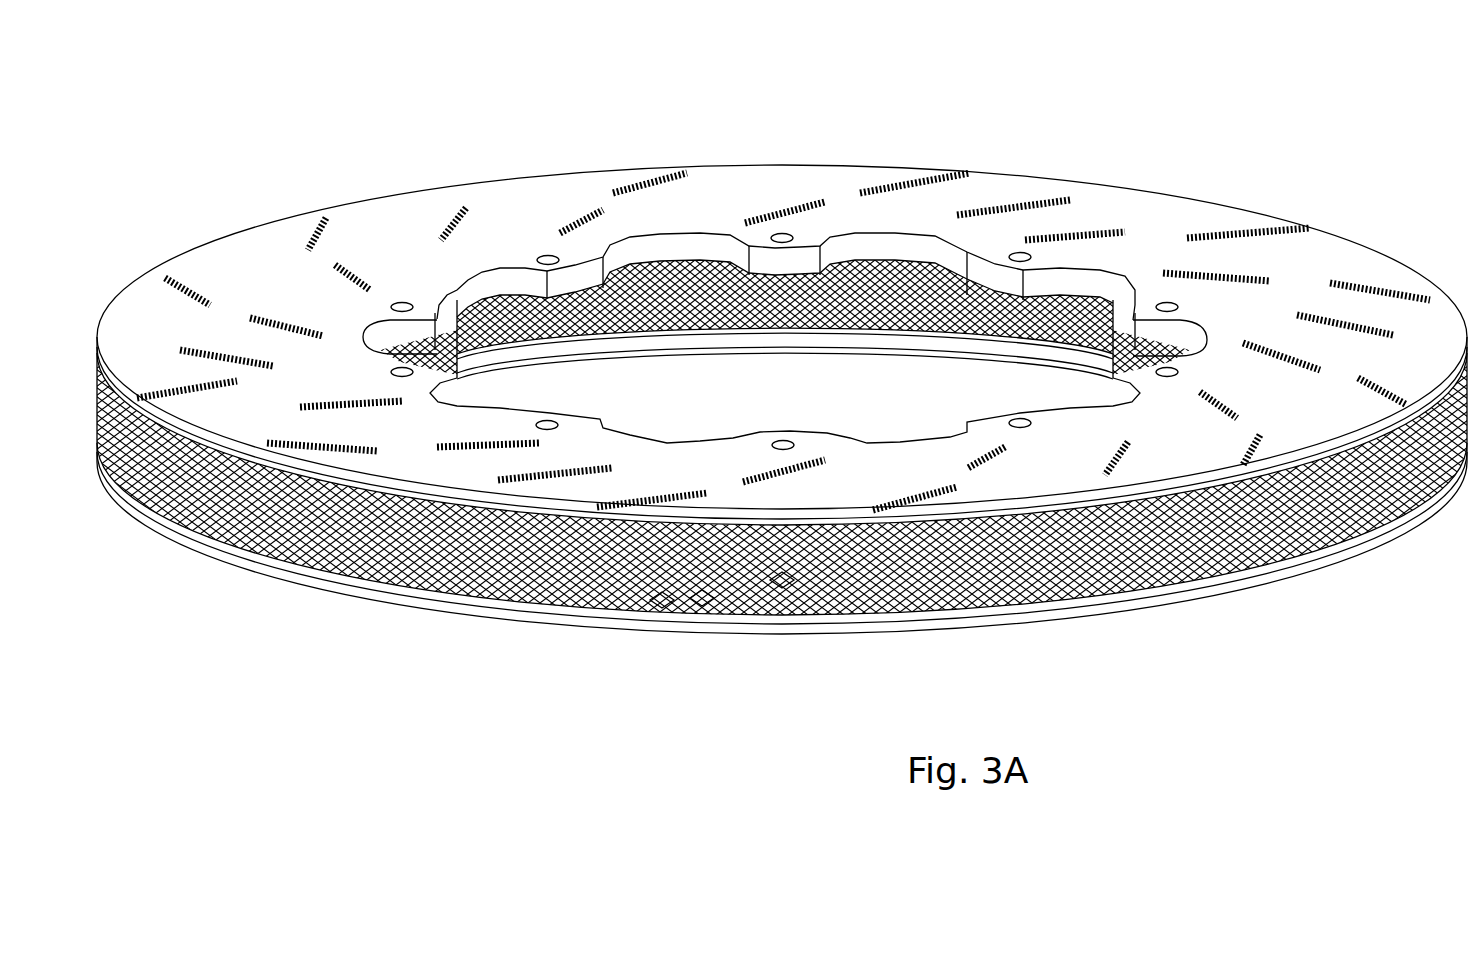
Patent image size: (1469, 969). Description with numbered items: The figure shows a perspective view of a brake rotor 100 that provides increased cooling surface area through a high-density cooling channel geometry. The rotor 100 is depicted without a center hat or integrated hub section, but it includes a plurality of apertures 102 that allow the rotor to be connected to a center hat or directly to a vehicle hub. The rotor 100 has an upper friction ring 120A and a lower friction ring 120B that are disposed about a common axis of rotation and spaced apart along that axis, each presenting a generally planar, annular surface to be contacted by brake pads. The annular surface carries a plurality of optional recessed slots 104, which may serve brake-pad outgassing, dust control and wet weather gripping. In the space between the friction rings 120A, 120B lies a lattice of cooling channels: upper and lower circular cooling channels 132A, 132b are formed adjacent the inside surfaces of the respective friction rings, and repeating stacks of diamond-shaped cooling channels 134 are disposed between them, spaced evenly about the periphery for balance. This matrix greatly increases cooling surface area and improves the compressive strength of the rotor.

The brake rotor 100 is at (463, 116).
The apertures 102 is at (782, 237).
The recessed slots 104 is at (1023, 203).
The upper friction ring 120A is at (227, 262).
The lower friction ring 120B is at (274, 589).
The upper circular cooling channel 132A is at (548, 530).
The lower circular cooling channel 132b is at (720, 610).
The diamond-shaped cooling channels 134 is at (778, 593).